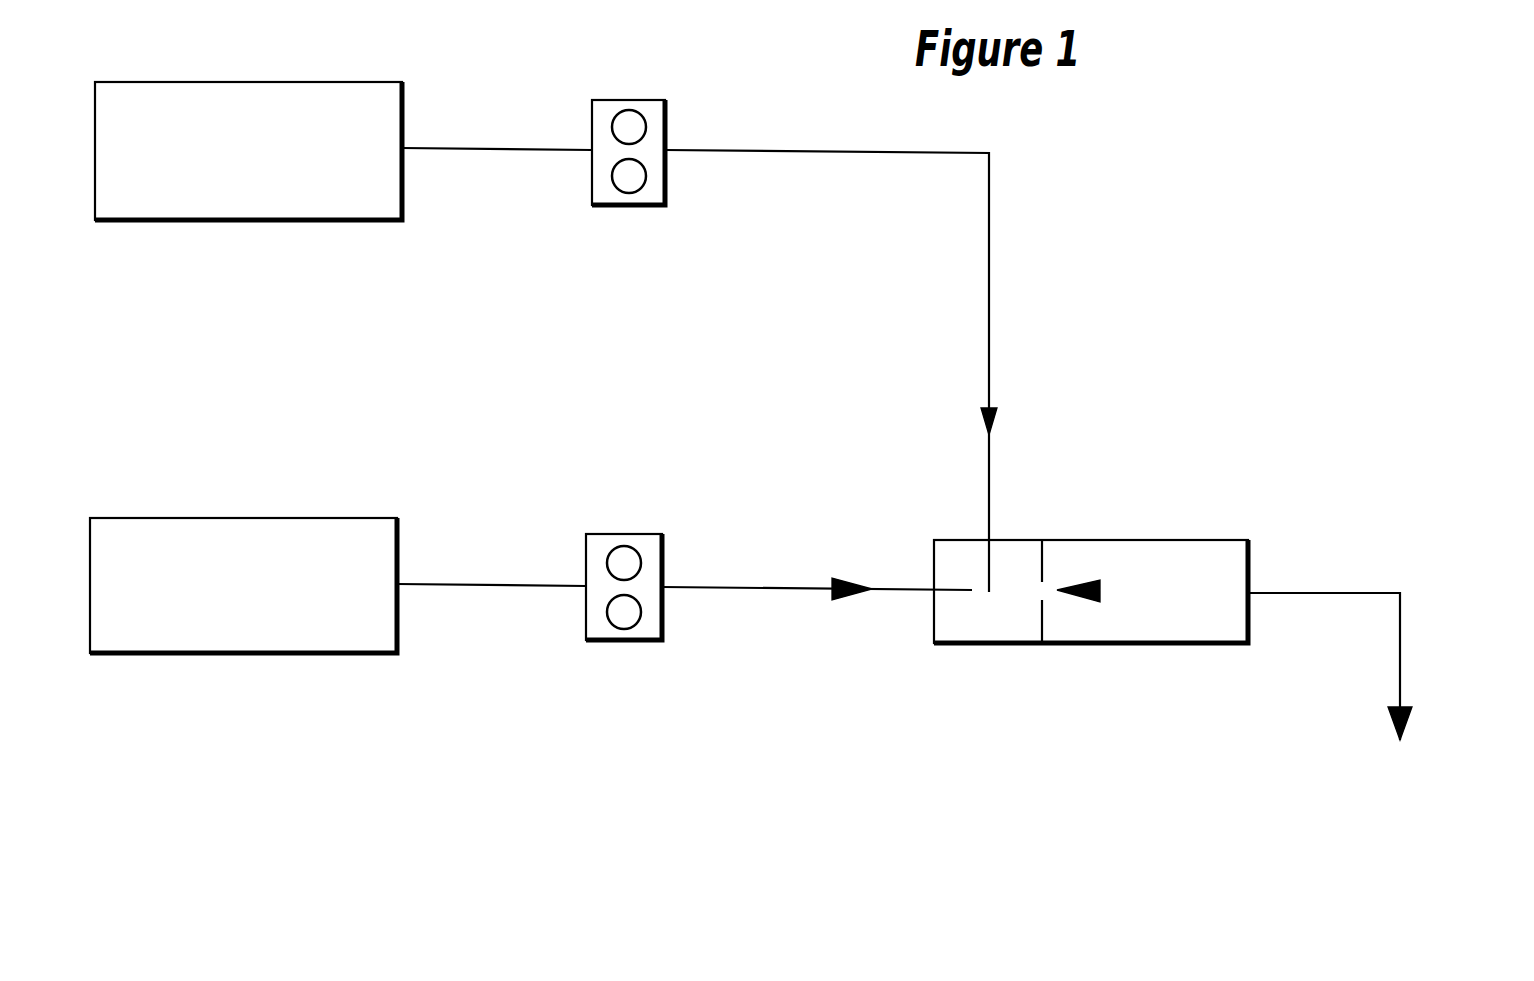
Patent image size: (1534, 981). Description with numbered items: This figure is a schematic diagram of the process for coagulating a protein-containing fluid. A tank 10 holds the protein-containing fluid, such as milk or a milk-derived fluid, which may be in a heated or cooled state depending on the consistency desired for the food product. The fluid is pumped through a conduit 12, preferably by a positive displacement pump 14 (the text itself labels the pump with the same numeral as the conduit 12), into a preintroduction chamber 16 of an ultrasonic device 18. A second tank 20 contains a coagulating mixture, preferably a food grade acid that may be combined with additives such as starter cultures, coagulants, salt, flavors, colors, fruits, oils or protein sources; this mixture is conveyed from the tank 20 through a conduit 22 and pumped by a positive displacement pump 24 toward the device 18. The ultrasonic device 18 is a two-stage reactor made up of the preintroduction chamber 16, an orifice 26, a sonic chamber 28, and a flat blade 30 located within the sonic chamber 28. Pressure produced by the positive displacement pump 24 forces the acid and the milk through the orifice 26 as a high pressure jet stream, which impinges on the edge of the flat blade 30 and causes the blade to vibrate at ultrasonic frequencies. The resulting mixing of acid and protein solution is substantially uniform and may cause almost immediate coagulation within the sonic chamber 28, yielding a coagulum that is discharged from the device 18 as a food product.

The tank 10 is at (350, 100).
The conduit 12 is at (517, 147).
The latex metering pump 14 is at (667, 123).
The preintroduction chamber 16 is at (993, 605).
The ultrasonic device 18 is at (1252, 544).
The tank 20 is at (299, 635).
The conduit 22 is at (512, 588).
The positive displacement pump 24 is at (658, 617).
The orifice 26 is at (1042, 584).
The sonic chamber 28 is at (1130, 543).
The flat blade 30 is at (1083, 603).